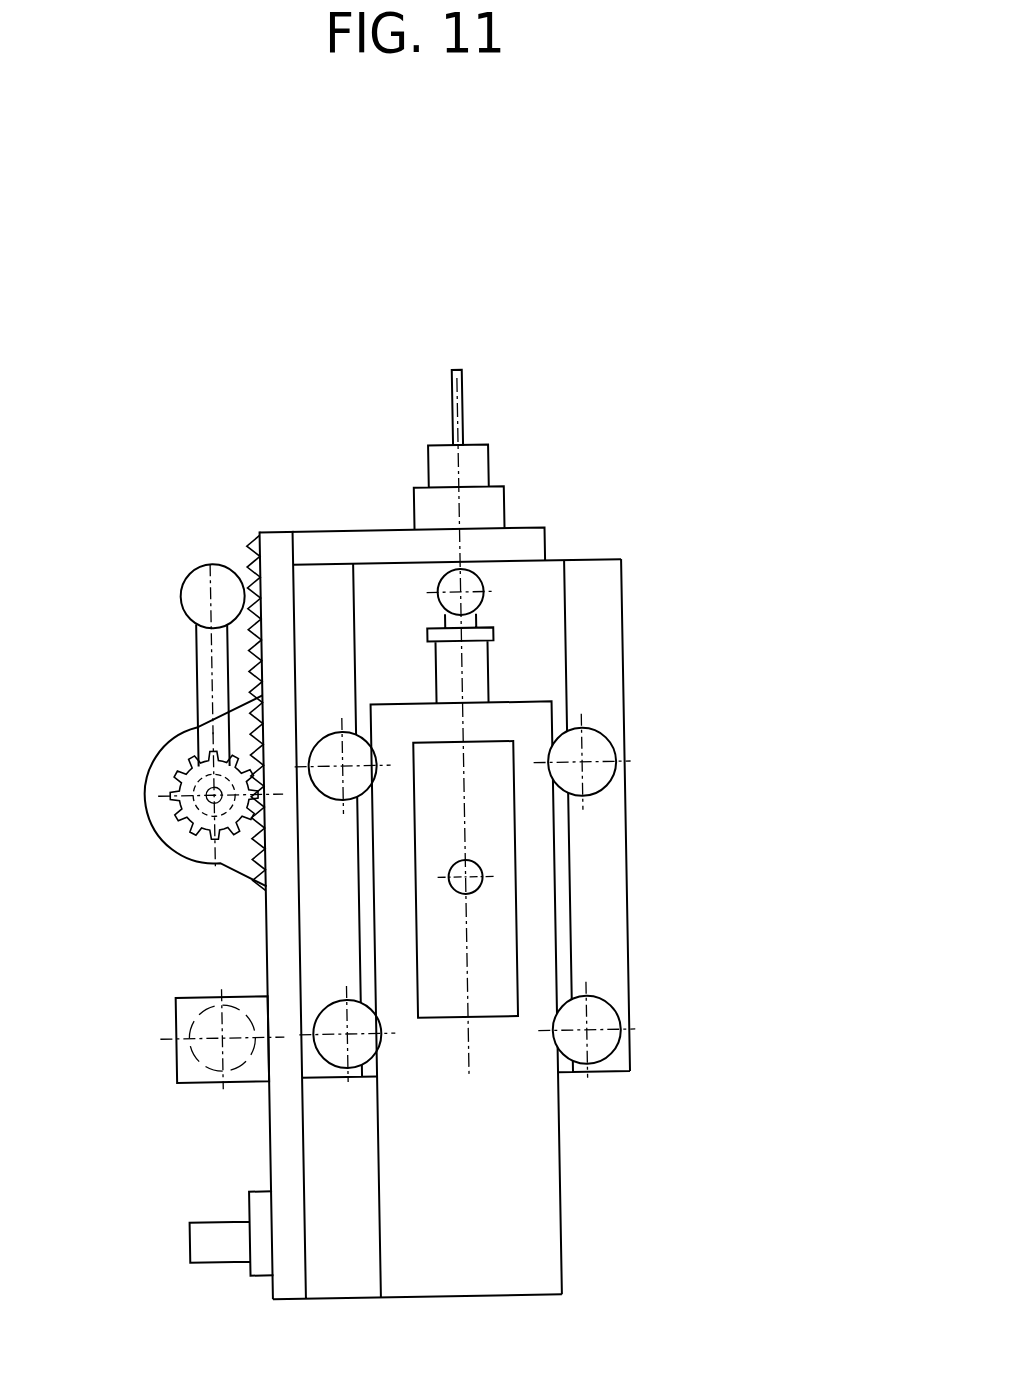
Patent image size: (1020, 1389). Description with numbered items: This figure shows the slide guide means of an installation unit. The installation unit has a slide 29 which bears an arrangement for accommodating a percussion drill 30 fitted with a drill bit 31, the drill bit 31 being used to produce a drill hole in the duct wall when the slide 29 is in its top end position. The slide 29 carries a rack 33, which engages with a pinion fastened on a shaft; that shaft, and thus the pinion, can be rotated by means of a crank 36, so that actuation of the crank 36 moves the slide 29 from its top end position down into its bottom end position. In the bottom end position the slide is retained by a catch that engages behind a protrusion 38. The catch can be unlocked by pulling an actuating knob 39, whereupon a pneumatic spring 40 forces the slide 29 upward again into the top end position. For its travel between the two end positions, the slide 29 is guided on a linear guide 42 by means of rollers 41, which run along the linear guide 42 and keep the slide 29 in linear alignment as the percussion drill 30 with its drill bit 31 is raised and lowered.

The slide 29 is at (608, 670).
The percussion drill 30 is at (483, 508).
The drill bit 31 is at (464, 410).
The rack 33 is at (252, 535).
The crank 36 is at (215, 675).
The protrusion 38 is at (225, 1243).
The actuating knob 39 is at (177, 1051).
The pneumatic spring 40 is at (478, 653).
The rollers 41 is at (595, 768).
The linear guide 42 is at (478, 1190).